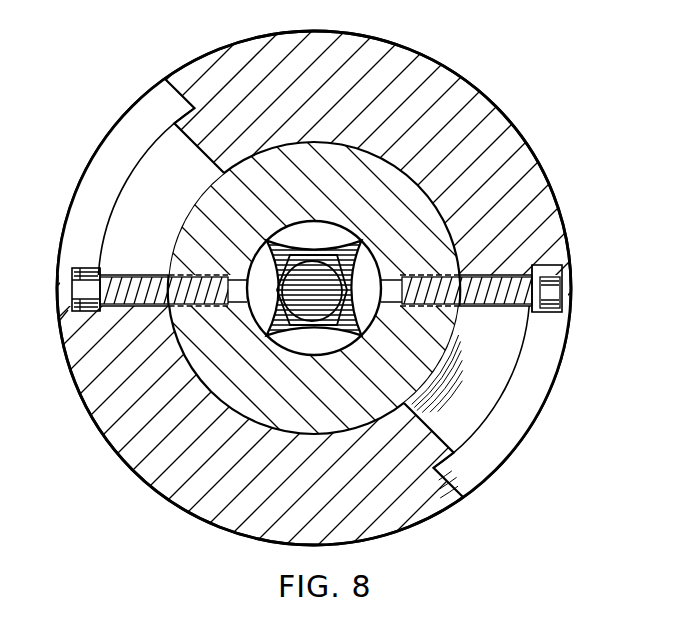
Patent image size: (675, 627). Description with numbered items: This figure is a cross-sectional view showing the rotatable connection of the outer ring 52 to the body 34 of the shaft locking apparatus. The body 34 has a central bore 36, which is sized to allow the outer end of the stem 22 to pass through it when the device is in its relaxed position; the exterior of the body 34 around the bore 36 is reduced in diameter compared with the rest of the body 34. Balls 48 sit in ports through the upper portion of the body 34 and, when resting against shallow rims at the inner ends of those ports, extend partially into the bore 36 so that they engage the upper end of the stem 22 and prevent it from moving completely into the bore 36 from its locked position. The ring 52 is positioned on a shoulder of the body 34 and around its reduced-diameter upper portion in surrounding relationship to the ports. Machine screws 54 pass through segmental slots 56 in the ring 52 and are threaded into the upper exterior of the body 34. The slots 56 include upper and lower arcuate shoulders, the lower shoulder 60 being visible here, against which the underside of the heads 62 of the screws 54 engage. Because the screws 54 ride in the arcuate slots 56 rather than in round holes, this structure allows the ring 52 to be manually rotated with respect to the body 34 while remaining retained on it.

The stem 22 is at (360, 241).
The body 34 is at (405, 170).
The bore 36 is at (62, 331).
The balls 48 is at (268, 326).
The ring 52 is at (467, 80).
The machine screws 54 is at (72, 268).
The segmental slots 56 is at (157, 147).
The lower arcuate shoulder 60 is at (143, 153).
The heads 62 is at (93, 262).